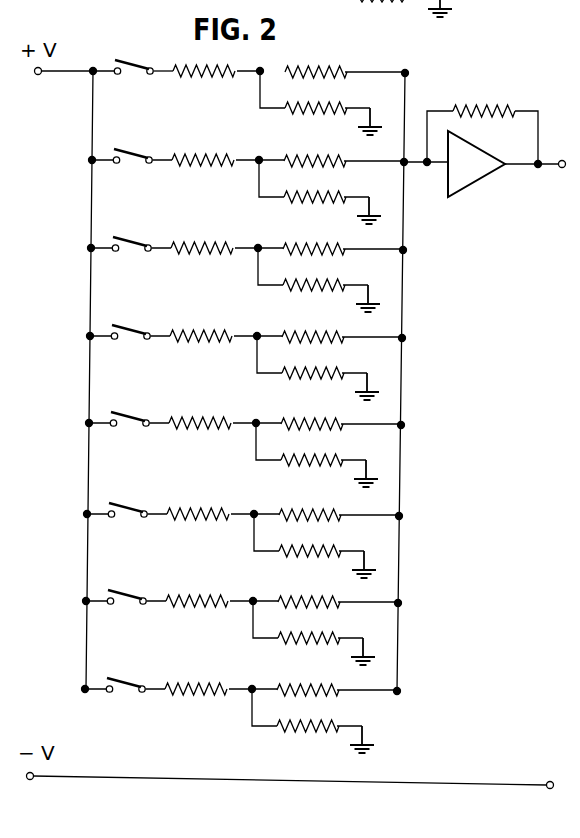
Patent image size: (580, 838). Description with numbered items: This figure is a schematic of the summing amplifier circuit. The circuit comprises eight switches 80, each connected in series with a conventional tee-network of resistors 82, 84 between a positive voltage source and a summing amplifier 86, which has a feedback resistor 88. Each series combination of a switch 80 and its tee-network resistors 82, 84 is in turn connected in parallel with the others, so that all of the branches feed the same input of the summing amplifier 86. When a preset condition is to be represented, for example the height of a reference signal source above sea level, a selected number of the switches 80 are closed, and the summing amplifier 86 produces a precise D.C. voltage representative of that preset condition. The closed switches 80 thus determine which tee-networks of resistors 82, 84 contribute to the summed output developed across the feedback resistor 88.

The switch 80 is at (132, 149).
The tee-network resistor 82 is at (213, 79).
The tee-network resistor 84 is at (304, 112).
The summing amplifier 86 is at (487, 202).
The feedback resistor 88 is at (484, 119).